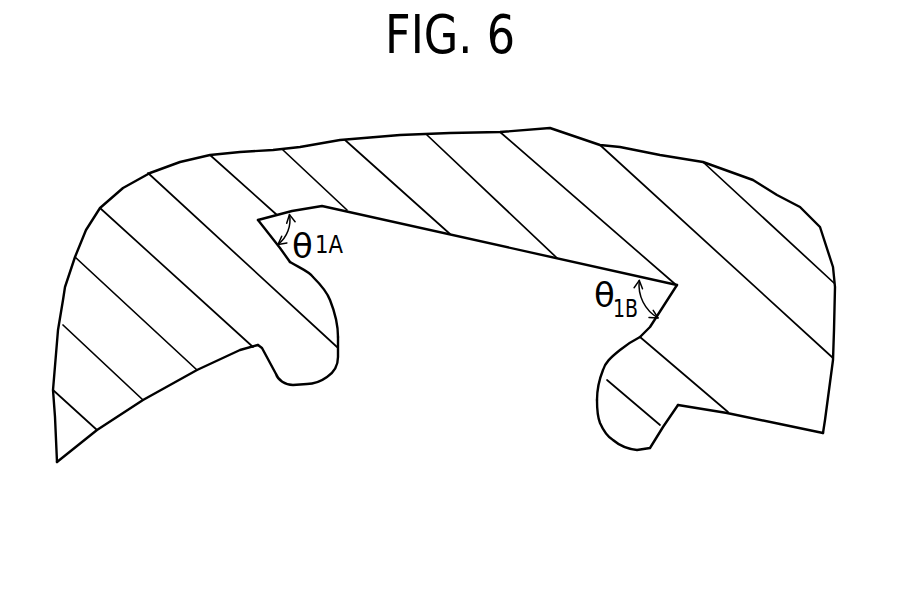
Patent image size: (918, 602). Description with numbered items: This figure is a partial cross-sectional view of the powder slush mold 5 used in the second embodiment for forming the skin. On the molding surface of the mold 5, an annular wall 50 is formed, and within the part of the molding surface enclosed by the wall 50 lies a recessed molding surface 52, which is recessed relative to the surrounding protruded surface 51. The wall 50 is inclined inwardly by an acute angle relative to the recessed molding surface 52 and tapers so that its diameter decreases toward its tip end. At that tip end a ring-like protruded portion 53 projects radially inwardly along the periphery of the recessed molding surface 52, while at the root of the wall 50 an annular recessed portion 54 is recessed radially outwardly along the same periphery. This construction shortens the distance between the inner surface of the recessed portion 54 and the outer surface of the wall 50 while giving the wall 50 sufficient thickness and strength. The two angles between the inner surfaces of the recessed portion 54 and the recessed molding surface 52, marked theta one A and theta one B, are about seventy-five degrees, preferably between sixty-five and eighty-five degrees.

The powder slush mold 5 is at (683, 190).
The annular wall 50 is at (305, 367).
The protruded surface 51 is at (140, 405).
The recessed molding surface 52 is at (449, 234).
The ring-like protruded portion 53 is at (308, 287).
The annular recessed portion 54 is at (278, 242).